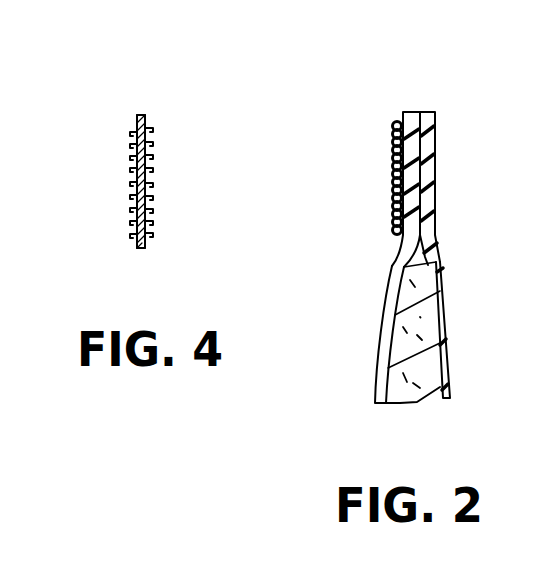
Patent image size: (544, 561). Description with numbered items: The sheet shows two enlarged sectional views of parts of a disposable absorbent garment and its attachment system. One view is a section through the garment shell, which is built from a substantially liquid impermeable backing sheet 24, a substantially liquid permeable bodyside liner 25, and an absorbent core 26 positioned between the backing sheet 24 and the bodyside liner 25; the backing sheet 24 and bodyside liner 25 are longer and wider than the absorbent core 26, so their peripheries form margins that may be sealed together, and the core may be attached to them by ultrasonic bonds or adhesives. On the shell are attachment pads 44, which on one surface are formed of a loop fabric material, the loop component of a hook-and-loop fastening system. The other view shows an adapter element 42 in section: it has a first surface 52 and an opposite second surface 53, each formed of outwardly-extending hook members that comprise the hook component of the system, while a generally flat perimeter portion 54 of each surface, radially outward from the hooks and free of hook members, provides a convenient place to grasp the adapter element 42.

In FIG. 2, the backing sheet 24 is at (384, 292).
In FIG. 2, the bodyside liner 25 is at (438, 240).
In FIG. 2, the absorbent core 26 is at (410, 400).
In FIG. 2, the attachment pads 44 is at (391, 121).
In FIG. 4, the adapter element 42 is at (152, 118).
In FIG. 4, the first surface 52 is at (130, 163).
In FIG. 4, the second surface 53 is at (152, 153).
In FIG. 4, the perimeter portion 54 is at (137, 120).